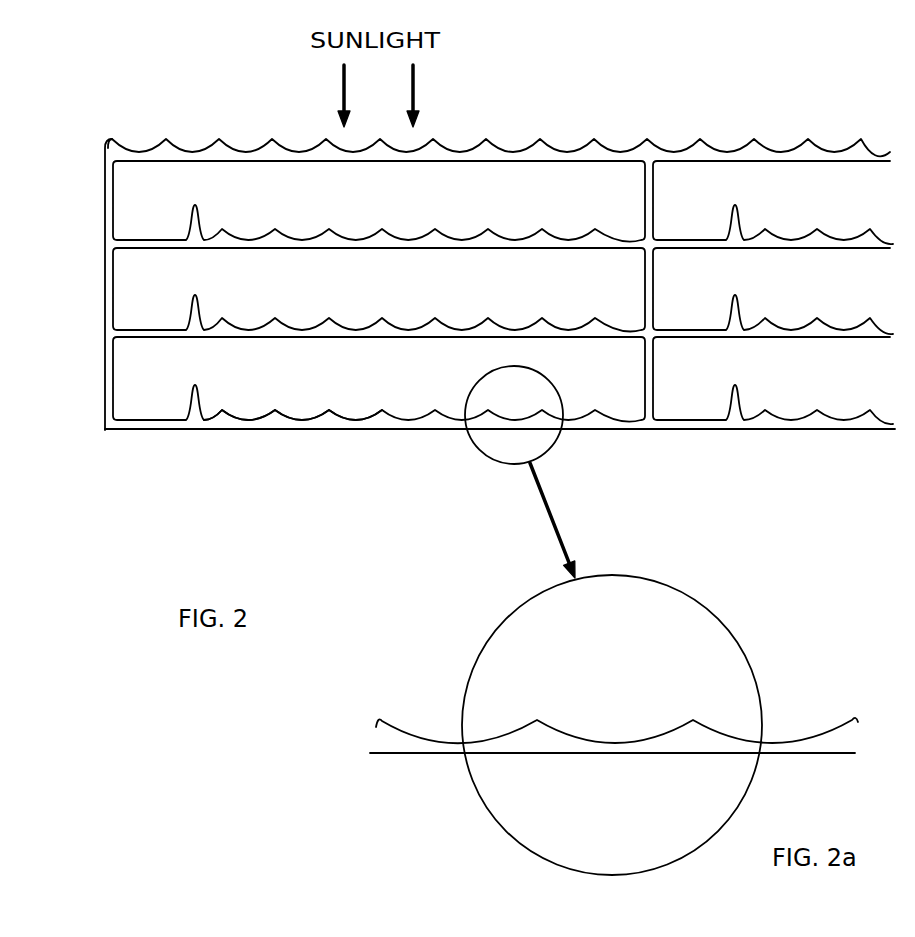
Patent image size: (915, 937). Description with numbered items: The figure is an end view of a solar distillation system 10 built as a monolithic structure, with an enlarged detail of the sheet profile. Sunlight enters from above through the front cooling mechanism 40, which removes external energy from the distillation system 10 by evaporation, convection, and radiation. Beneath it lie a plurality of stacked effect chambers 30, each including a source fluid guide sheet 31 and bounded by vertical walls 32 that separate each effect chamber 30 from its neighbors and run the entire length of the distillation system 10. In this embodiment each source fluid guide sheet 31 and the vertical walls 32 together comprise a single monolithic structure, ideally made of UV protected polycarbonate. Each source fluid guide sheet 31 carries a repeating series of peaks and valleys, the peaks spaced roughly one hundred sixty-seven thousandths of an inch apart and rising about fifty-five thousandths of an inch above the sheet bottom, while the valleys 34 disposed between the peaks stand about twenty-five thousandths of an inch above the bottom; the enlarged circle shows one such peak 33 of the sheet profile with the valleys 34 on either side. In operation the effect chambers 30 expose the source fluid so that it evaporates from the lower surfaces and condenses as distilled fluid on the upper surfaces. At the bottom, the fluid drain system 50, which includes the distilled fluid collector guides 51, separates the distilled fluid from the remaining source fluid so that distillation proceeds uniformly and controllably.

In FIG. 2, the solar distillation system 10 is at (537, 24).
In FIG. 2, the effect chambers 30 is at (253, 208).
In FIG. 2, the source fluid guide sheet 31 is at (277, 423).
In FIG. 2, the vertical walls 32 is at (105, 185).
In FIG. 2A, the ridge of textured surface 33 is at (530, 735).
In FIG. 2A, the valleys 34 is at (782, 745).
In FIG. 2, the front cooling mechanism 40 is at (512, 148).
In FIG. 2, the fluid drain system 50 is at (165, 414).
In FIG. 2, the distilled fluid collector guides 51 is at (140, 423).